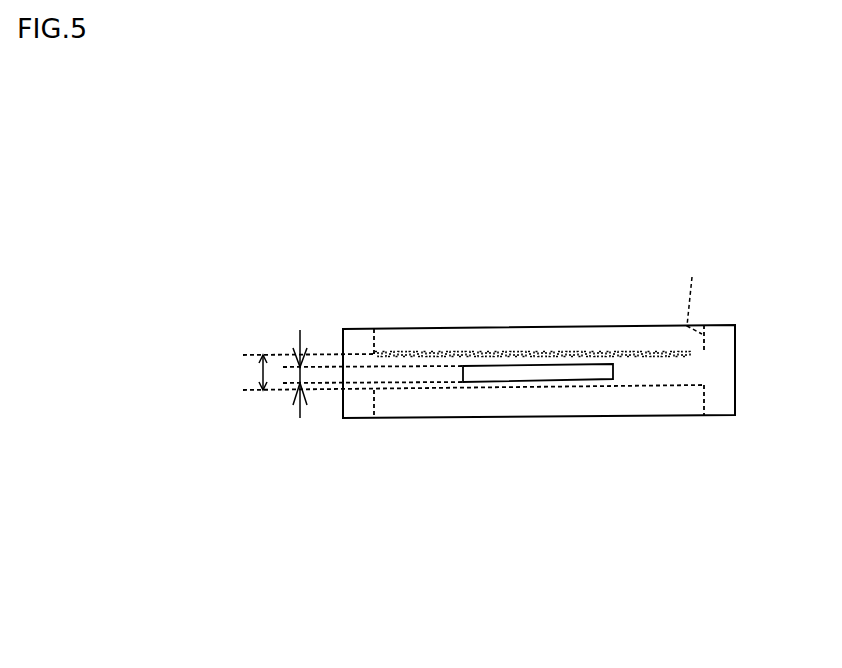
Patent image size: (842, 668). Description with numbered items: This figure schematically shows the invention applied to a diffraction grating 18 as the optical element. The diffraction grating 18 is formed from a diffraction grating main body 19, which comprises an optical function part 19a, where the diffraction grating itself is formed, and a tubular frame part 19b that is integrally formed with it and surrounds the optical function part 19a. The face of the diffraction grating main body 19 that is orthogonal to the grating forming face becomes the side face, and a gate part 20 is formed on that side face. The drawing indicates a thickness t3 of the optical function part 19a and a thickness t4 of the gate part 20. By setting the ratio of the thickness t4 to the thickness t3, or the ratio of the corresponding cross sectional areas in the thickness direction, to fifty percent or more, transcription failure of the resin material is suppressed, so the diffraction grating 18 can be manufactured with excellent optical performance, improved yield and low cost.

The diffraction grating 18 is at (402, 312).
The diffraction grating main body 19 is at (482, 328).
The optical function part 19a is at (565, 351).
The tubular frame part 19b is at (690, 292).
The gate part 20 is at (520, 382).
The thickness of the optical function part t3 is at (251, 372).
The thickness of the gate part t4 is at (299, 363).